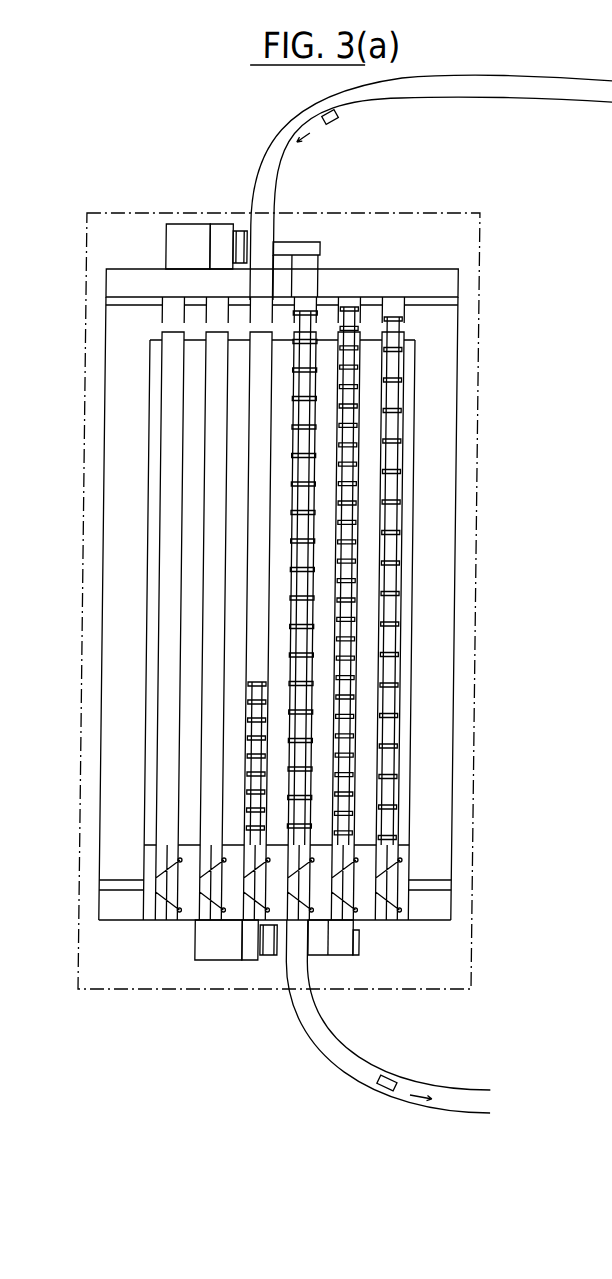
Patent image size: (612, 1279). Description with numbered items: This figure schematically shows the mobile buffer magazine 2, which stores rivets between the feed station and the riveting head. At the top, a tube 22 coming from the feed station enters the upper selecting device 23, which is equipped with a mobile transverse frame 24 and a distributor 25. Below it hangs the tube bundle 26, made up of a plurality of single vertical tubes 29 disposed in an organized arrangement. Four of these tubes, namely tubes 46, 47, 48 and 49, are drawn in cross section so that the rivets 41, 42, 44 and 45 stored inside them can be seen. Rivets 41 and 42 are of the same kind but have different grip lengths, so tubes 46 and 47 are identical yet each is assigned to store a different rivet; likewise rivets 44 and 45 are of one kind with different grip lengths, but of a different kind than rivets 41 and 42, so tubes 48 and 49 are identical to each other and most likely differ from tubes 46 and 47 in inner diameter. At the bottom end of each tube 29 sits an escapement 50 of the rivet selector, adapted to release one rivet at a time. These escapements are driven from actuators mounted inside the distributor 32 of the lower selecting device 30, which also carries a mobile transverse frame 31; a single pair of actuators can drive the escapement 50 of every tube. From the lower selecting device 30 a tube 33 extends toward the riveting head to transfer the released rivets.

The mobile buffer magazine 2 is at (476, 723).
The tube 22 is at (452, 80).
The upper selecting device 23 is at (441, 283).
The mobile transverse frame 24 is at (176, 242).
The distributor 25 is at (256, 268).
The tube bundle 26 is at (412, 522).
The single tube 29 is at (167, 602).
The lower selecting device 30 is at (116, 912).
The mobile transverse frame 31 is at (211, 955).
The distributor 32 is at (299, 943).
The tube 33 is at (456, 1093).
The rivet 41 is at (254, 700).
The rivet 42 is at (299, 571).
The rivet 44 is at (344, 553).
The rivet 45 is at (403, 571).
The tube 46 is at (250, 632).
The tube 47 is at (295, 464).
The tube 48 is at (308, 462).
The tube 49 is at (381, 458).
The escapement 50 is at (408, 893).